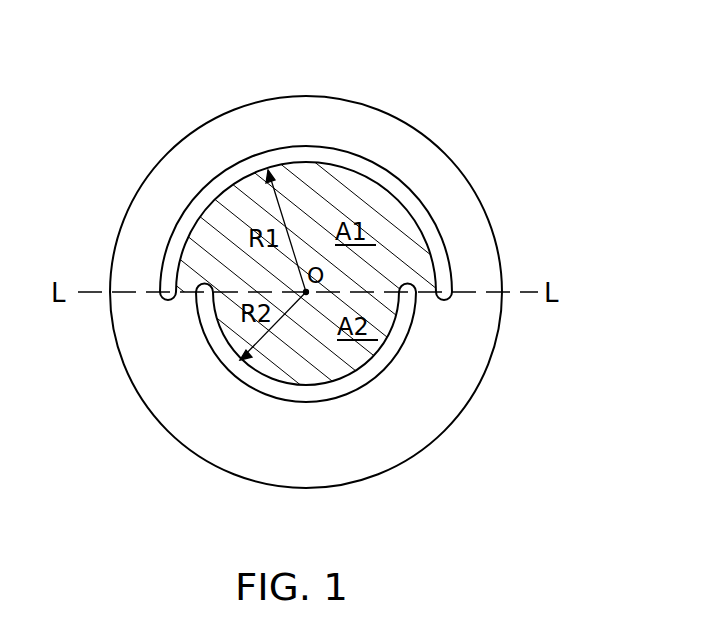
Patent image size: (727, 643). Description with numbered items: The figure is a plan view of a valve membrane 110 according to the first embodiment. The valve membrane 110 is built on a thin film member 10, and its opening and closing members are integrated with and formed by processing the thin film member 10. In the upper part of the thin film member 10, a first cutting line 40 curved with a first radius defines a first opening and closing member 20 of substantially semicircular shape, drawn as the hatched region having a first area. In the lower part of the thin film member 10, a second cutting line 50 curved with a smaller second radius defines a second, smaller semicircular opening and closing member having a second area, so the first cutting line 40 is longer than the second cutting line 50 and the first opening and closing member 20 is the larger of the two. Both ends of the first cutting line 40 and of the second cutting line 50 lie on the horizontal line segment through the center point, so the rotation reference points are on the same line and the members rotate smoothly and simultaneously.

The valve membrane 110 is at (488, 113).
The thin film member 10 is at (477, 206).
The first opening and closing member 20 is at (358, 197).
The first cutting line 40 is at (167, 260).
The second cutting line 50 is at (270, 385).